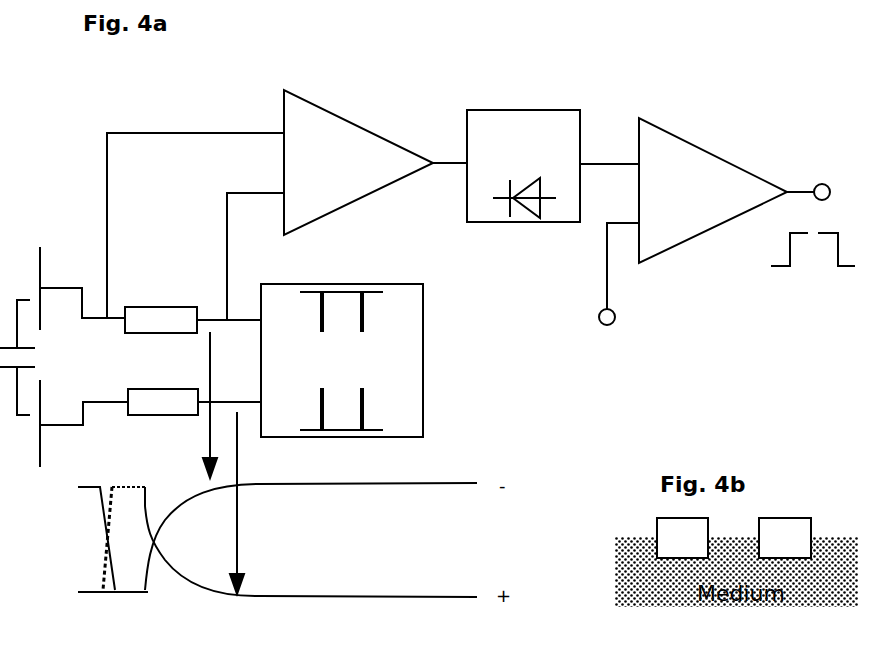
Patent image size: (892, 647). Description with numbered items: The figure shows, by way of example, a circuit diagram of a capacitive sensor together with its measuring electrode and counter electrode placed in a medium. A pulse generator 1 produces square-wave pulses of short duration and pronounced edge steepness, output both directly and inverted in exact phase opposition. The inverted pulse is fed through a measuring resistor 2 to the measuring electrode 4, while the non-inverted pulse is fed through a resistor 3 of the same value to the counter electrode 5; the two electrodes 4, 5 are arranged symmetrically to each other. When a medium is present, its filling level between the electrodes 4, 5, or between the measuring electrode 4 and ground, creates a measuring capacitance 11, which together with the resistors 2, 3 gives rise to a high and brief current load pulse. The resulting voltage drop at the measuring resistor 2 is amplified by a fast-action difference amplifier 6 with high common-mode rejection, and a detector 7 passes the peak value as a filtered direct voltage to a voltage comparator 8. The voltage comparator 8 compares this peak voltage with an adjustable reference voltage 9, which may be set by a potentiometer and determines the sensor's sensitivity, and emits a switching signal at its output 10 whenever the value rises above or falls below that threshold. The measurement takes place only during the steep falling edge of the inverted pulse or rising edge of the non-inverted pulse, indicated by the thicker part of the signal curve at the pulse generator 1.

In FIG. 4a, the pulse generator 1 is at (342, 360).
In FIG. 4a, the measuring resistor 2 is at (161, 320).
In FIG. 4a, the resistor 3 is at (163, 402).
In FIG. 4a, the measuring electrode 4 is at (79, 269).
In FIG. 4b, the measuring electrode 4 is at (682, 539).
In FIG. 4a, the counter electrode 5 is at (80, 441).
In FIG. 4b, the counter electrode 5 is at (785, 539).
In FIG. 4a, the difference amplifier 6 is at (358, 162).
In FIG. 4a, the detector 7 is at (523, 166).
In FIG. 4a, the voltage comparator 8 is at (713, 190).
In FIG. 4a, the reference voltage 9 is at (612, 306).
In FIG. 4a, the output 10 is at (813, 200).
In FIG. 4a, the measuring capacitance 11 is at (40, 357).